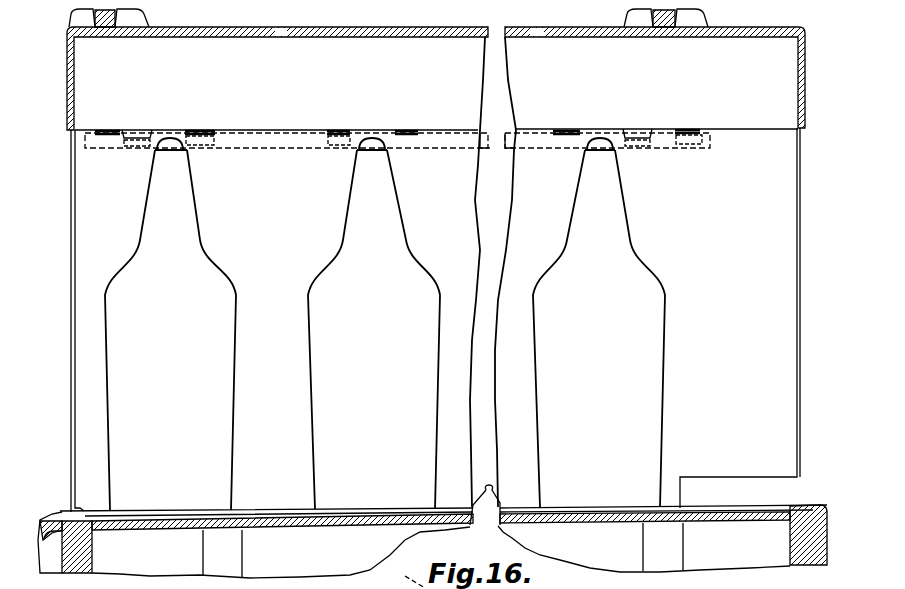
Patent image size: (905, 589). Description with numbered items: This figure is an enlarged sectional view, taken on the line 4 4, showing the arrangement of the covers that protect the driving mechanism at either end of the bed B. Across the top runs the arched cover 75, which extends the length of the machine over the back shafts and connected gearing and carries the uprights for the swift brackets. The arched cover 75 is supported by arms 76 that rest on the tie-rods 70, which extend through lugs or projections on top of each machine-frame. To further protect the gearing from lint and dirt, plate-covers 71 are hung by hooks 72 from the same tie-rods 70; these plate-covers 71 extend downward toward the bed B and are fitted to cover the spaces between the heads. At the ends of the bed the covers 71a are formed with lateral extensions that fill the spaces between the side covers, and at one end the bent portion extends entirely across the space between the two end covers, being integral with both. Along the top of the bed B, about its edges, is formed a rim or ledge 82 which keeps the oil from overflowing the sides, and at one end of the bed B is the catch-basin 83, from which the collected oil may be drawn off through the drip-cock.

The arched cover 75 is at (68, 68).
The arms 76 is at (140, 130).
The hooks 72 is at (208, 131).
The tie-rods 70 is at (85, 140).
The plate-covers 71 is at (385, 324).
The end covers 71a is at (72, 298).
The rim or ledge 82 is at (88, 510).
The catch-basin 83 is at (45, 525).
The section line 4 is at (404, 575).
The bed B is at (441, 550).